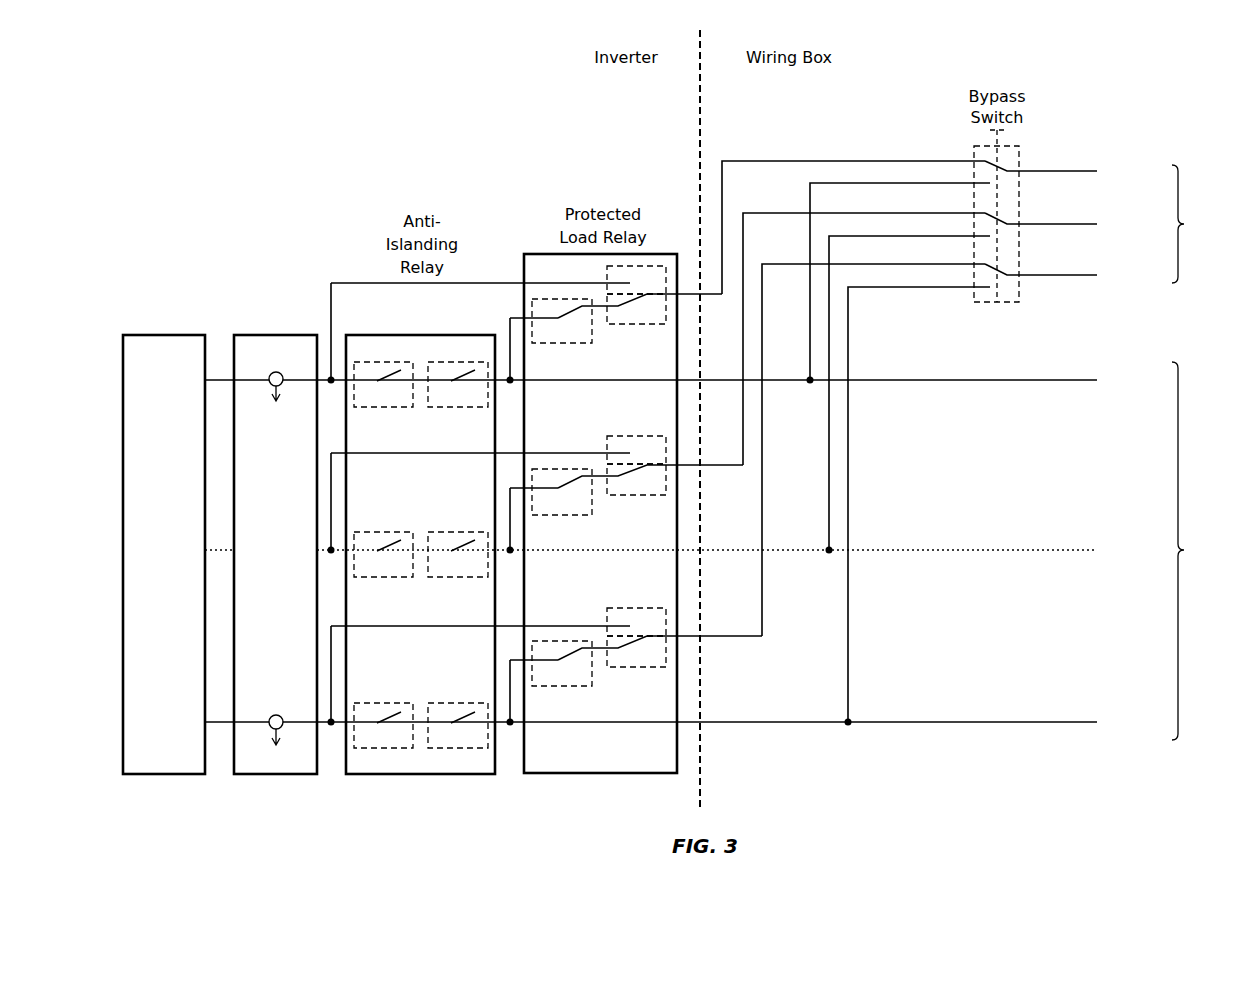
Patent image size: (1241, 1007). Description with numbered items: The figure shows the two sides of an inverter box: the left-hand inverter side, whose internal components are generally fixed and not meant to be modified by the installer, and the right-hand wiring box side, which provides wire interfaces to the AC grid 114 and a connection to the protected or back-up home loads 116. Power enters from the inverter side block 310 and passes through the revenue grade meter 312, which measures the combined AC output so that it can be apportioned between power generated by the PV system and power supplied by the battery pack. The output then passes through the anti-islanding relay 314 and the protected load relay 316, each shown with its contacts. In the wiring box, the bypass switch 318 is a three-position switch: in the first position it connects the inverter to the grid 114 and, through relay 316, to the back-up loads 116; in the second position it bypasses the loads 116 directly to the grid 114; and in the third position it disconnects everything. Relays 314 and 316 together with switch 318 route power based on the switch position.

The inverter side input 310 is at (165, 774).
The revenue grade meter 312 is at (276, 774).
The anti-islanding relay 314 is at (420, 774).
The protected load relay 316 is at (602, 773).
The bypass switch 318 is at (995, 302).
The back-up loads 116 is at (1133, 212).
The AC grid 114 is at (1159, 551).